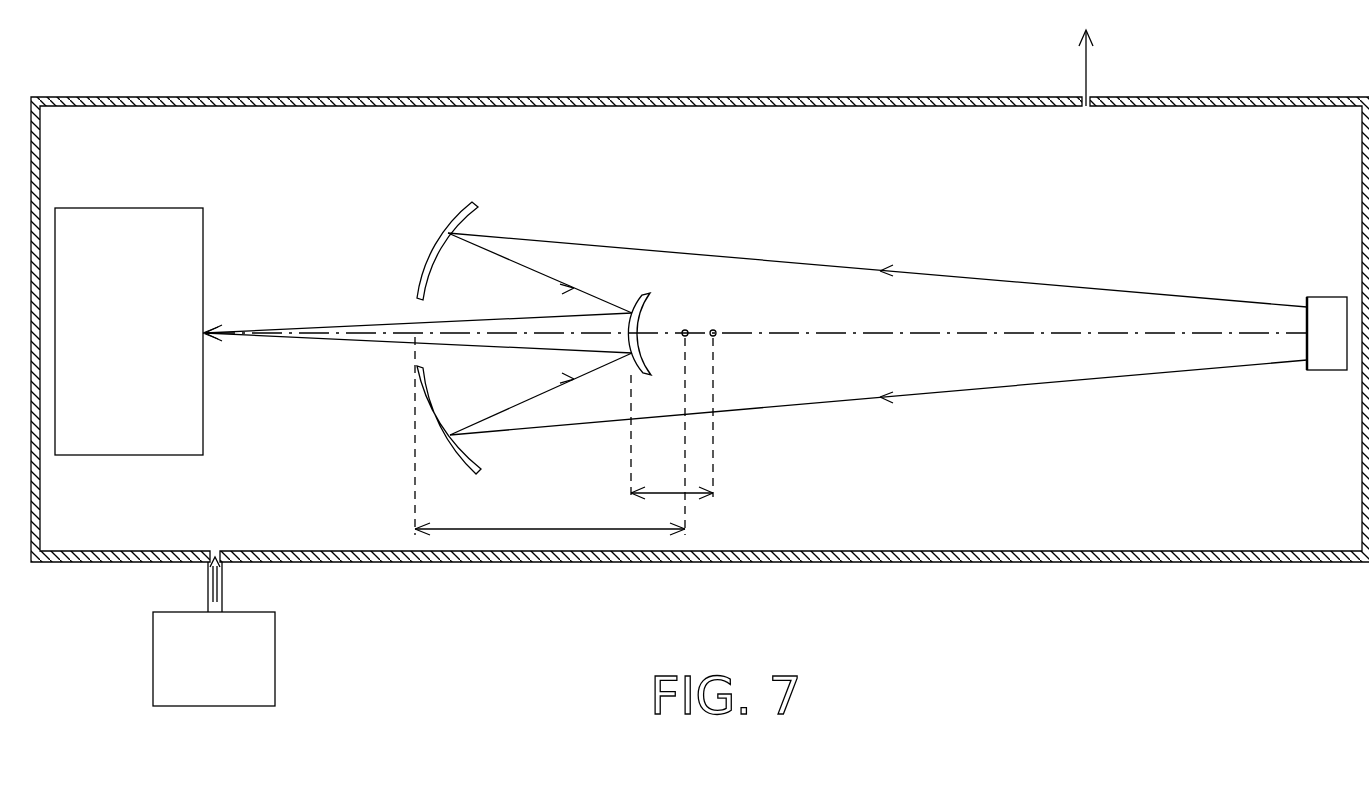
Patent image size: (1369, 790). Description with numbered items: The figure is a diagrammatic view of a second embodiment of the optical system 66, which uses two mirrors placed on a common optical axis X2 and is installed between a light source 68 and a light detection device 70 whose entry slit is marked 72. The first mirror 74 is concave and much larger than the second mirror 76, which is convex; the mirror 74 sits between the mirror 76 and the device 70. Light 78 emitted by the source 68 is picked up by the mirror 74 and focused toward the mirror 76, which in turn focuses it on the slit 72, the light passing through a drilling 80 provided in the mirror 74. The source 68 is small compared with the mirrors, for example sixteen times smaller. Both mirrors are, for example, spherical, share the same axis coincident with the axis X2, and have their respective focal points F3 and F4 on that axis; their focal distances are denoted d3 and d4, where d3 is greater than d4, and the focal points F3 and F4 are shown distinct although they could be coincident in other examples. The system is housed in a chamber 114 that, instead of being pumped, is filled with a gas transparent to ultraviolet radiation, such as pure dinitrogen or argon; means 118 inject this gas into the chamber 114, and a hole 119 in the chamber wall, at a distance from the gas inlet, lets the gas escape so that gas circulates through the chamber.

The optical system 66 is at (623, 213).
The light source 68 is at (1323, 305).
The light detection device 70 is at (160, 223).
The entry slit 72 is at (210, 326).
The first mirror 74 is at (447, 218).
The second mirror 76 is at (648, 298).
The light 78 is at (1053, 283).
The drilling 80 is at (413, 310).
The chamber 114 is at (1090, 562).
The gas injecting means 118 is at (260, 666).
The hole 119 is at (1088, 96).
The optical axis X2 is at (1225, 333).
The focal point of the first mirror F3 is at (688, 331).
The focal point of the second mirror F4 is at (716, 336).
The focal distance of the first mirror d3 is at (550, 436).
The focal distance of the second mirror d4 is at (672, 482).